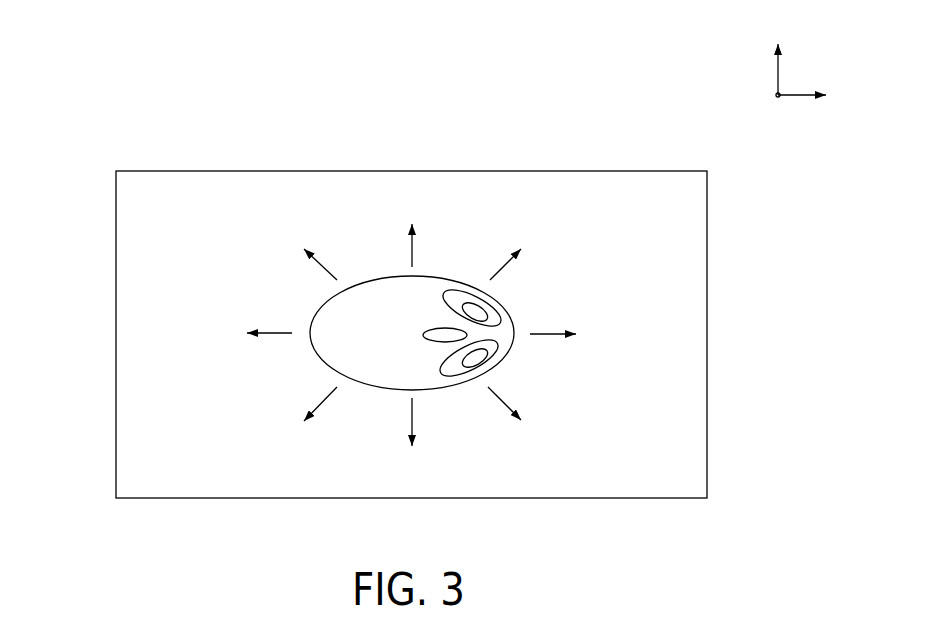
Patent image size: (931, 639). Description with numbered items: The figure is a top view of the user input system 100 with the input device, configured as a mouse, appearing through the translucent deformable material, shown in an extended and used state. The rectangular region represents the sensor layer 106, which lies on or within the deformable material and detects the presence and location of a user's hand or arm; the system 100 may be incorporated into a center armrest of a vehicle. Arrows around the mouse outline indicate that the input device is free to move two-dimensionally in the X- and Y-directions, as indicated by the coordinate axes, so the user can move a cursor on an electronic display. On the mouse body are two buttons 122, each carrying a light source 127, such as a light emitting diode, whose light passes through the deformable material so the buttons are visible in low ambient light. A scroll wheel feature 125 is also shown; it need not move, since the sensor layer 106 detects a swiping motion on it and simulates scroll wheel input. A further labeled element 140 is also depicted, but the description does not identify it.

The user input system 100 is at (450, 254).
The sensor layer 106 is at (641, 230).
The graphical face element 140 is at (411, 275).
The buttons 122 is at (496, 314).
The scroll wheel feature 125 is at (423, 336).
The light sources 127 is at (471, 301).